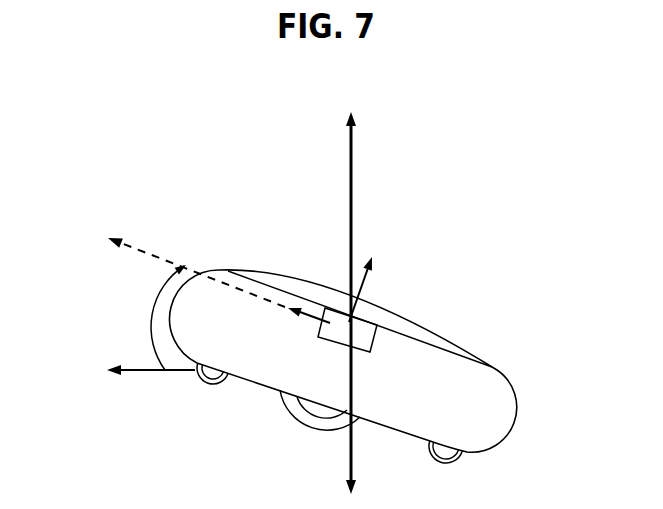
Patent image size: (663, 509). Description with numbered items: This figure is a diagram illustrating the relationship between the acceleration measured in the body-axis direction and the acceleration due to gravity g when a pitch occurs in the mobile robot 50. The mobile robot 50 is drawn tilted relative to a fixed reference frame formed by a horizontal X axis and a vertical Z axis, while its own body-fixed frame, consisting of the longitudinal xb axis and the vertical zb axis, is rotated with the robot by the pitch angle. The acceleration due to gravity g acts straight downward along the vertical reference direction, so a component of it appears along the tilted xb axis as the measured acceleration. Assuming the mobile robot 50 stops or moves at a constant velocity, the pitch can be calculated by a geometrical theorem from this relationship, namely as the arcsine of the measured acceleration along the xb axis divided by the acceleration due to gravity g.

The mobile robot 50 is at (397, 366).
The Z-axis Z is at (380, 187).
The acceleration due to gravity g is at (378, 400).
The X-axis X is at (131, 377).
The z_b-axis zb is at (398, 287).
The x_b-axis xb is at (294, 339).